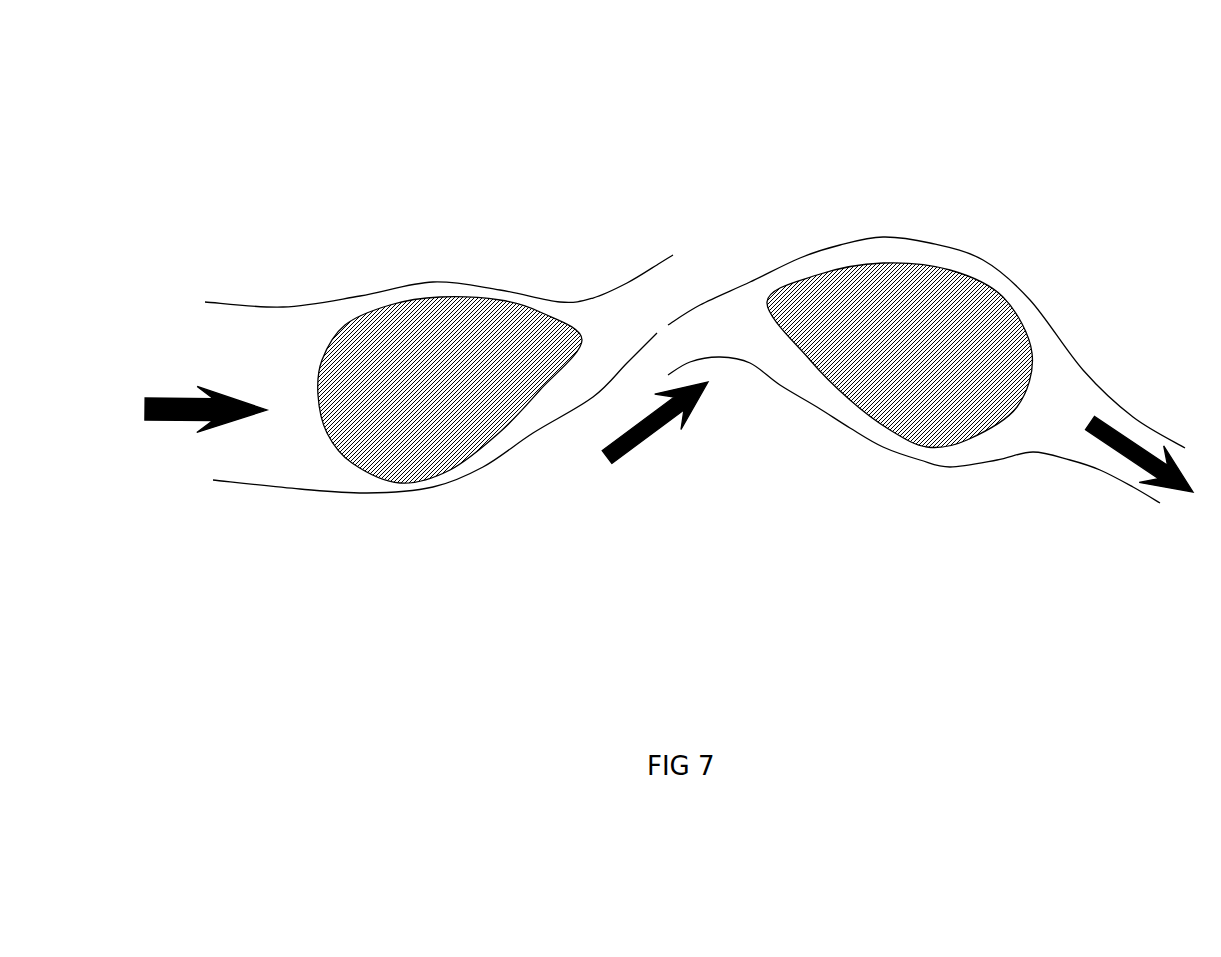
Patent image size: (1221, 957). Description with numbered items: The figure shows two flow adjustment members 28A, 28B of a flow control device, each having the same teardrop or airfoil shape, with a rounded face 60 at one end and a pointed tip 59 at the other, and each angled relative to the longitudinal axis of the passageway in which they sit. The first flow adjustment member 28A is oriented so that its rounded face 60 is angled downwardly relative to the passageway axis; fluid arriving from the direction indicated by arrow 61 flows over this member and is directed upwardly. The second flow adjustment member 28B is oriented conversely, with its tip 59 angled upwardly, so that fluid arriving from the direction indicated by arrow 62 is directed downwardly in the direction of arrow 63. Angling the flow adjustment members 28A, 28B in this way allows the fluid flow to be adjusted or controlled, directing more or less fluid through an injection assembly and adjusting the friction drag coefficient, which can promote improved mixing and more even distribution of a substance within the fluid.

The flow adjustment member 28A is at (430, 345).
The flow adjustment member 28B is at (910, 310).
The tip 59 is at (767, 297).
The rounded face 60 is at (322, 345).
The arrow 61 is at (197, 433).
The arrow 62 is at (718, 432).
The arrow 63 is at (1132, 485).